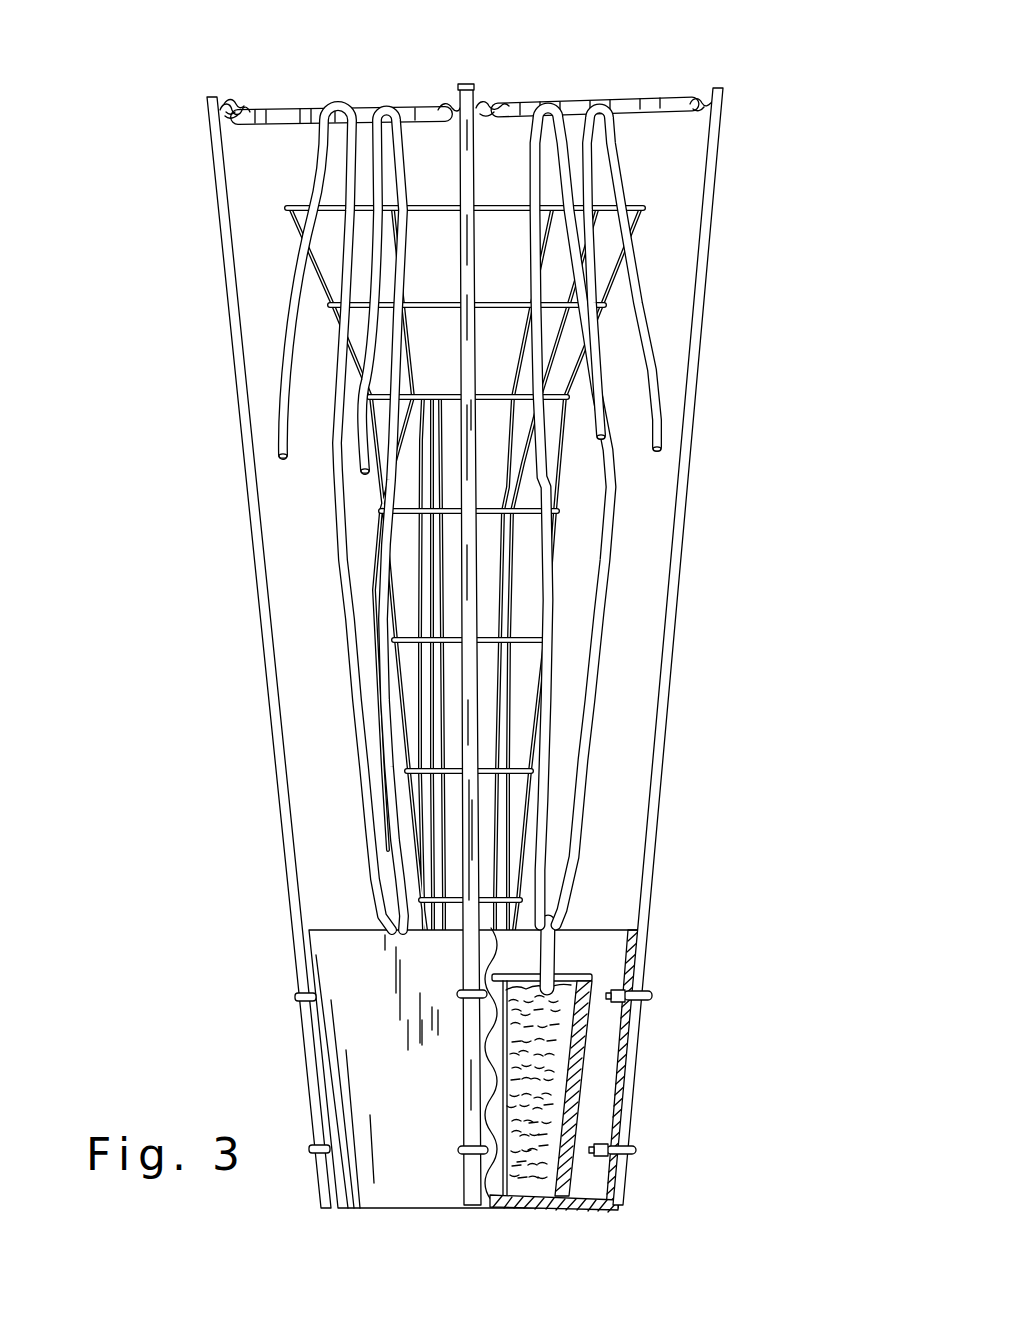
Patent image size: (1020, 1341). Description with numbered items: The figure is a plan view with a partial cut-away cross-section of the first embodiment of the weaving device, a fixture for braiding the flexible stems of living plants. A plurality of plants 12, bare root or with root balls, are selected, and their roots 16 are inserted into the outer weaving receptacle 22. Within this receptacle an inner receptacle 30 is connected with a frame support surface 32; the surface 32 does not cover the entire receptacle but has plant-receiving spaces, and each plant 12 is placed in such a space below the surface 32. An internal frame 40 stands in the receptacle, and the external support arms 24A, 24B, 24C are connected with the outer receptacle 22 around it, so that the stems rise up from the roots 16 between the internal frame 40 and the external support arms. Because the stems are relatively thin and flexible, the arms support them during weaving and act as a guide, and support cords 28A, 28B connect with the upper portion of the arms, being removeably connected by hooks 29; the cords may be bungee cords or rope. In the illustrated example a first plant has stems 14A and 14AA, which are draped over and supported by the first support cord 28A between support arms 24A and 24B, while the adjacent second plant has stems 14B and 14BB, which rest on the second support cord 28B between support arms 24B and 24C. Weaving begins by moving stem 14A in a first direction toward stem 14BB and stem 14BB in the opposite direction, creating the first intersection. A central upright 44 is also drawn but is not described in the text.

The plant 12 is at (600, 748).
The stem 14A is at (389, 846).
The stem 14AA is at (361, 757).
The stem 14B is at (598, 672).
The stem 14BB is at (557, 645).
The roots 16 is at (538, 1126).
The outer receptacle 22 is at (626, 995).
The external support arm 24A is at (262, 549).
The external support arm 24B is at (459, 97).
The external support arm 24C is at (657, 820).
The first support cord 28A is at (278, 113).
The second support cord 28B is at (648, 100).
The hook 29 is at (231, 106).
The inner receptacle 30 is at (583, 1064).
The frame support surface 32 is at (580, 978).
The internal frame 40 is at (570, 470).
The center stake 44 is at (495, 205).